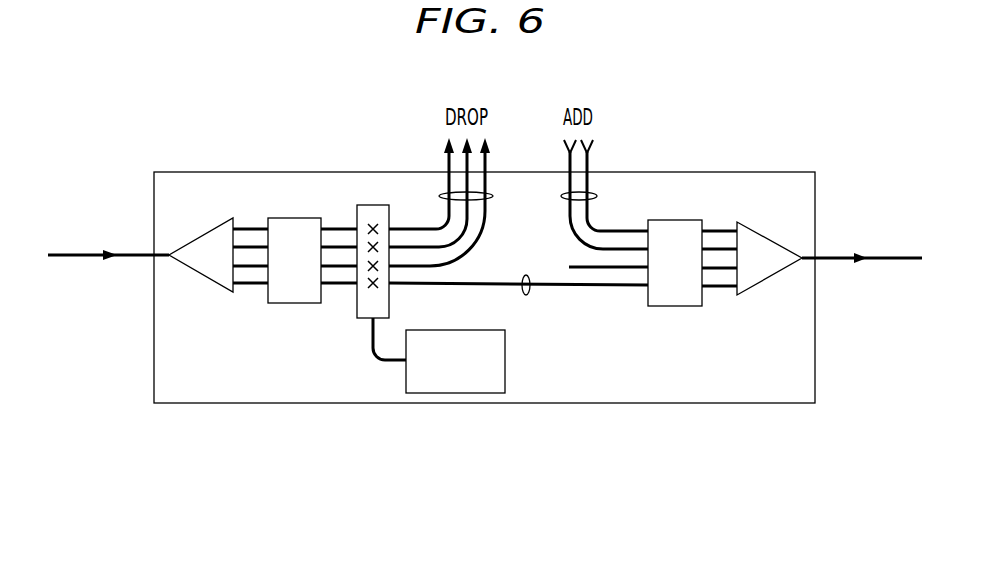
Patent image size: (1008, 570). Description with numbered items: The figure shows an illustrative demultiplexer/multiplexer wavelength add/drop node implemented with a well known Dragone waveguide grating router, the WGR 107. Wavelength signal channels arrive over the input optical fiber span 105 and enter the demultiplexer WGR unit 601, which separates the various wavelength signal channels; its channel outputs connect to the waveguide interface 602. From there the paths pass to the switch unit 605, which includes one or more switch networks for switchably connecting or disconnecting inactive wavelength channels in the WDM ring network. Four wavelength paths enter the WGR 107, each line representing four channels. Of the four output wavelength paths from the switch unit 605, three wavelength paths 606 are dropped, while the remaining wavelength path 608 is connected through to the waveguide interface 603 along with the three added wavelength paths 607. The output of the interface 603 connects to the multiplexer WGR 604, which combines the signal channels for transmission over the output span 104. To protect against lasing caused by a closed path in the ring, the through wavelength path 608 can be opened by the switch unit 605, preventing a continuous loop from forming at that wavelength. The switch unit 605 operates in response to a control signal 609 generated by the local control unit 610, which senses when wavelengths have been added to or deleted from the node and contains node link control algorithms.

The span 104 is at (892, 254).
The span 105 is at (76, 252).
The WGR 107 is at (287, 404).
The demultiplexer WGR unit 601 is at (200, 278).
The waveguide interface 602 is at (296, 305).
The waveguide interface 603 is at (677, 308).
The multiplexer WGR 604 is at (770, 282).
The switch unit 605 is at (372, 204).
The dropped wavelength paths 606 is at (494, 196).
The added wavelength paths 607 is at (598, 196).
The wavelength path 608 is at (527, 296).
The control signal 609 is at (375, 358).
The control unit 610 is at (436, 336).